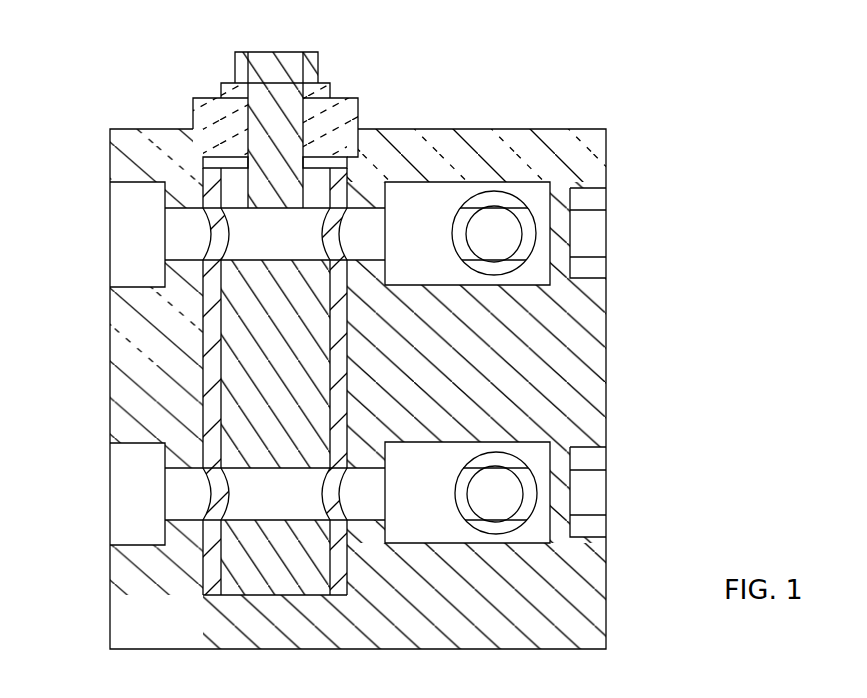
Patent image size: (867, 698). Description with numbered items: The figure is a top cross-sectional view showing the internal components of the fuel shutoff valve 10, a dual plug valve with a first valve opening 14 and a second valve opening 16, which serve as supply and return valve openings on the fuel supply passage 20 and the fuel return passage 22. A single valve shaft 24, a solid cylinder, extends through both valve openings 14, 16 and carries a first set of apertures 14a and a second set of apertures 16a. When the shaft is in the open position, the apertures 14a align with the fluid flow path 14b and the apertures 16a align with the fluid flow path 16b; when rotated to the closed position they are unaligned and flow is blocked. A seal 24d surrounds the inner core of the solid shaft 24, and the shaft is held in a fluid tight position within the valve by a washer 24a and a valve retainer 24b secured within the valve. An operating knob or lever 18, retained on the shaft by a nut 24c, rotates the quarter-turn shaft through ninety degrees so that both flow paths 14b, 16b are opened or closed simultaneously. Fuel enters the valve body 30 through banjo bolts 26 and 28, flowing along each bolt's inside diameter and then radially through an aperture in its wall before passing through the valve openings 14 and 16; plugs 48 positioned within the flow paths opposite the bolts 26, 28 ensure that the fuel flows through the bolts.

The fuel shutoff valve 10 is at (595, 167).
The first valve opening 14 is at (128, 276).
The first set of apertures 14a is at (330, 228).
The fluid flow path 14b is at (175, 260).
The second valve opening 16 is at (130, 547).
The second set of apertures 16a is at (330, 489).
The fluid flow path 16b is at (190, 518).
The operating knob or lever 18 is at (325, 90).
The fuel supply passage 20 is at (128, 183).
The fuel return passage 22 is at (113, 447).
The valve shaft 24 is at (213, 374).
The washer 24a is at (213, 151).
The valve retainer 24b is at (212, 105).
The nut 24c is at (313, 59).
The seal 24d is at (194, 597).
The banjo bolt 26 is at (523, 207).
The banjo bolt 28 is at (523, 470).
The valve body 30 is at (606, 342).
The plug 48 is at (593, 222).